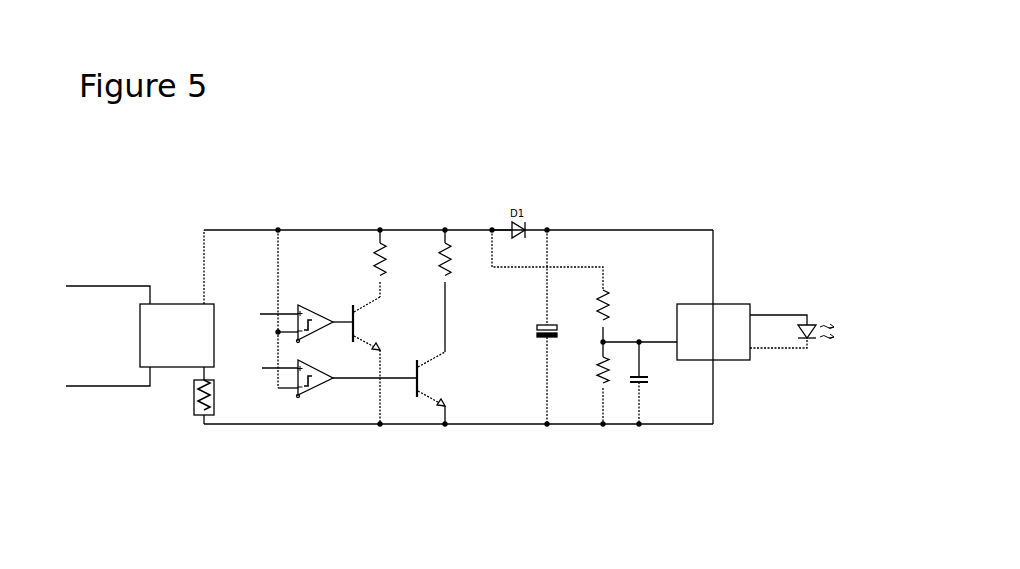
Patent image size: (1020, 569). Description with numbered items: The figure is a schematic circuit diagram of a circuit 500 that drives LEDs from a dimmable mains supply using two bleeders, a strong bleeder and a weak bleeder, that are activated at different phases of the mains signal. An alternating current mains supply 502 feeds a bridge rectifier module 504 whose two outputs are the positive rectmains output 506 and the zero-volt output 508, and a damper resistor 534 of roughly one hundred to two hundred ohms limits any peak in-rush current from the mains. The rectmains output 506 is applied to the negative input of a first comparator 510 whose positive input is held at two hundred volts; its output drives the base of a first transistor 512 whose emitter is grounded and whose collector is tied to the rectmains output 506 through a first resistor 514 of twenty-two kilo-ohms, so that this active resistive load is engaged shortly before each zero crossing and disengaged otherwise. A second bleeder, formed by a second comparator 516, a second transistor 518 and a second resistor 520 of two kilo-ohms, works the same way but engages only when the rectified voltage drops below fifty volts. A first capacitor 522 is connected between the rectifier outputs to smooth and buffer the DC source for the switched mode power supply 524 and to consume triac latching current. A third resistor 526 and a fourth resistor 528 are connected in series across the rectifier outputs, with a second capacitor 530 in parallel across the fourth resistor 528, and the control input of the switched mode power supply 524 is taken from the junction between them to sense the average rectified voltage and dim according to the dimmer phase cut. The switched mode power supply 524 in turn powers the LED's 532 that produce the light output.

The circuit 500 is at (578, 106).
The alternating current mains supply 502 is at (74, 271).
The bridge rectifier module 504 is at (180, 367).
The rectmains output 506 is at (230, 230).
The 0V output 508 is at (265, 424).
The first comparator 510 is at (297, 303).
The first transistor 512 is at (368, 350).
The resistor R1 514 is at (372, 262).
The second comparator 516 is at (317, 385).
The second transistor 518 is at (437, 407).
The resistor R2 520 is at (447, 243).
The capacitor C1 522 is at (548, 323).
The switched mode power supply 524 is at (733, 304).
The resistor R3 526 is at (603, 292).
The resistor R4 528 is at (597, 388).
The capacitor C2 530 is at (631, 383).
The LED's 532 is at (823, 372).
The damper resistor 534 is at (200, 410).